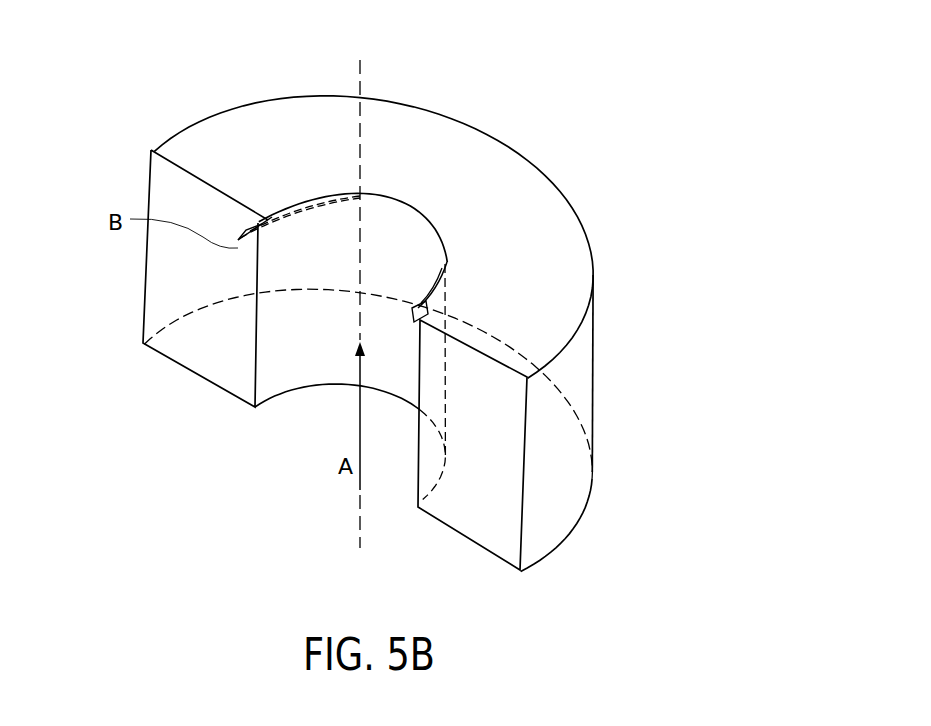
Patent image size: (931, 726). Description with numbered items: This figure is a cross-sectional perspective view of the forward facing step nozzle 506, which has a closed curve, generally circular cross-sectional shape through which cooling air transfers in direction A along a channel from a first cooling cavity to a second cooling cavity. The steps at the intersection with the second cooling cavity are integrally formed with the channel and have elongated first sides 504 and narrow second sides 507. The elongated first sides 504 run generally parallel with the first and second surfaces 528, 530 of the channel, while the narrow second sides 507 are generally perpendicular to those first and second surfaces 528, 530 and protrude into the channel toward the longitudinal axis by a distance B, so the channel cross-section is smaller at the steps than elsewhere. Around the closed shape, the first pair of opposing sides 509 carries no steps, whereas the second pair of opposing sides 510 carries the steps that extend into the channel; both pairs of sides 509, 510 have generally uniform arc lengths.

The elongated first sides 504 is at (363, 194).
The forward facing step nozzle 506 is at (434, 286).
The narrow second sides 507 is at (247, 229).
The first pair of opposing sides 509 is at (420, 240).
The second pair of opposing sides 510 is at (300, 203).
The first surface 528 is at (433, 470).
The second surface 530 is at (291, 327).